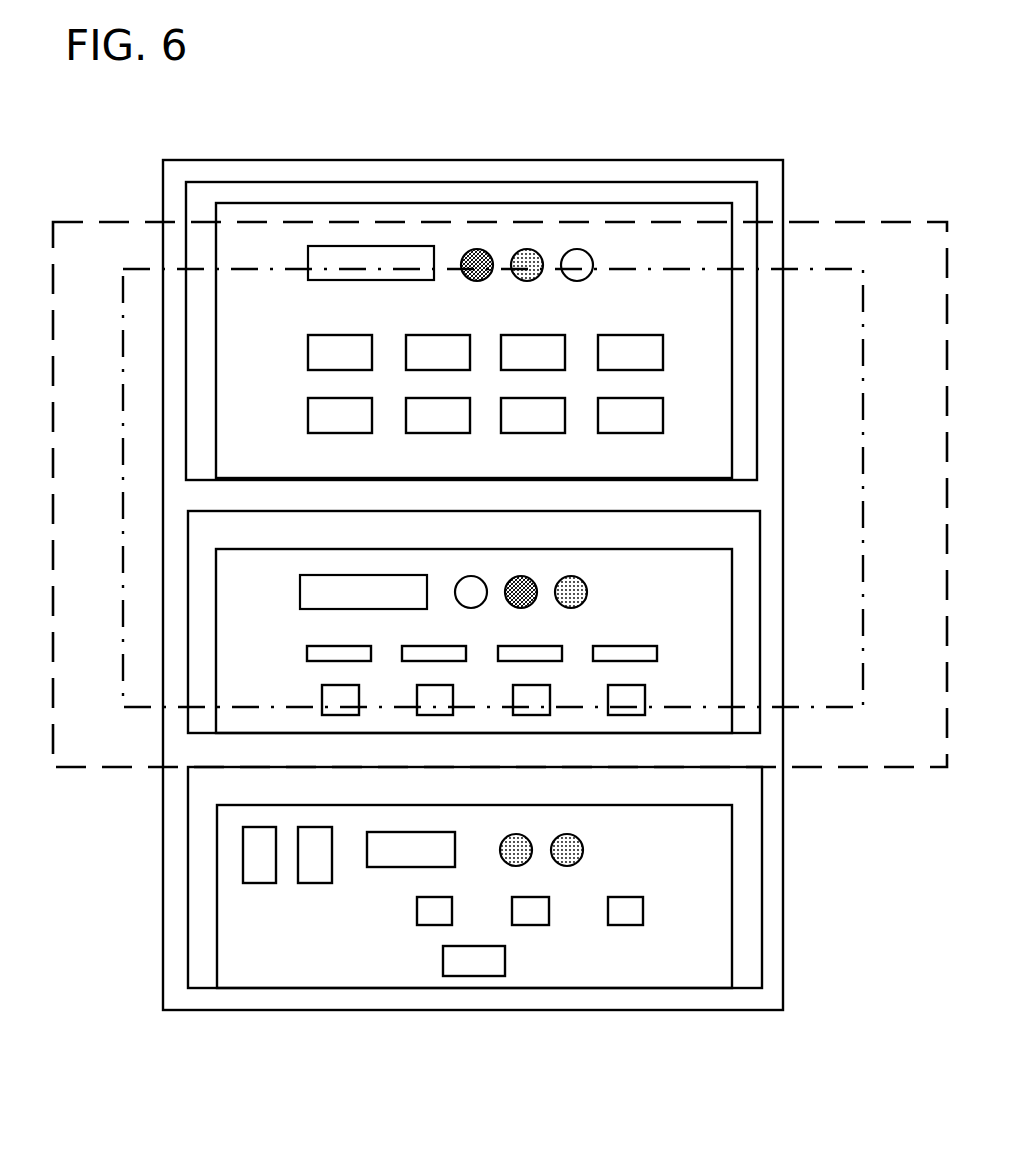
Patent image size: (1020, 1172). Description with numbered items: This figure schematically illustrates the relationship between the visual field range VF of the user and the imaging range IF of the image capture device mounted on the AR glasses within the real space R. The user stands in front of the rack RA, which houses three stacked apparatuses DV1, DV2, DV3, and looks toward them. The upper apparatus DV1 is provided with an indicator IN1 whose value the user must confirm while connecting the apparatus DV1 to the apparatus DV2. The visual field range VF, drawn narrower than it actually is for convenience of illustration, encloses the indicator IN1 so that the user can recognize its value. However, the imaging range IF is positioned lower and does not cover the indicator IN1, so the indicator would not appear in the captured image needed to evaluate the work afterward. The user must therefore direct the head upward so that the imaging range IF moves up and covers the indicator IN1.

The real space R is at (108, 136).
The rack RA is at (175, 252).
The indicator IN1 is at (386, 246).
The apparatus DV1 is at (522, 299).
The apparatus DV2 is at (715, 643).
The apparatus DV3 is at (713, 908).
The imaging range IF is at (866, 668).
The visual field range VF is at (880, 770).